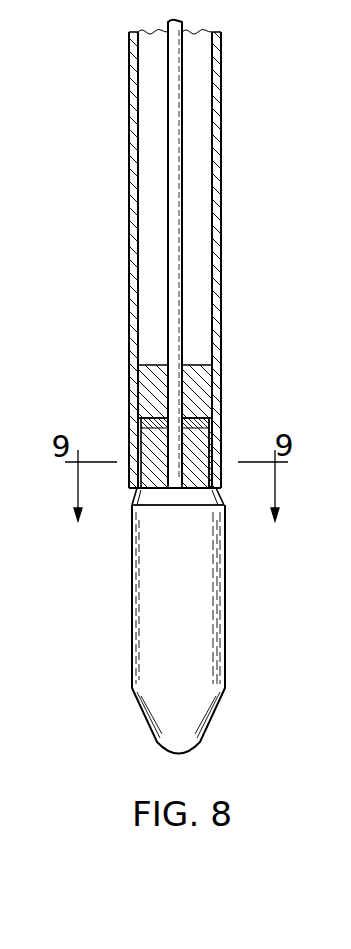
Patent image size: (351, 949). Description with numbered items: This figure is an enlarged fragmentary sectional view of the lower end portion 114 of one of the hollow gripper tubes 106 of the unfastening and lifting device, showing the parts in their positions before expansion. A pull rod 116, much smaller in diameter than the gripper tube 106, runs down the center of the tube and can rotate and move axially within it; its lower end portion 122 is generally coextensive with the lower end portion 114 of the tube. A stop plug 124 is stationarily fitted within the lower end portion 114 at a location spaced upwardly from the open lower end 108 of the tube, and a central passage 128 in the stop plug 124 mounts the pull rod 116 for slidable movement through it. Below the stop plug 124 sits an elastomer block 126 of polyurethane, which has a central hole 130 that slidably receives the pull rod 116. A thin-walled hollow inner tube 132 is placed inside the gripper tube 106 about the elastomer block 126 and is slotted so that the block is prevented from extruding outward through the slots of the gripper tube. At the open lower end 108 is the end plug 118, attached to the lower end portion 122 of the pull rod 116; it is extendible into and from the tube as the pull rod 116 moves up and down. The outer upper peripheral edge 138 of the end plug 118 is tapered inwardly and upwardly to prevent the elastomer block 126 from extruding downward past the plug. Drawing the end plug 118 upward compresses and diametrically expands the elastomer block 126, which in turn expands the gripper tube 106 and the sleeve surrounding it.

The gripper tube 106 is at (214, 258).
The lower end portion 114 is at (222, 273).
The pull rod 116 is at (182, 60).
The stop plug 124 is at (197, 390).
The central passage 128 is at (160, 398).
The open lower end 108 is at (135, 452).
The elastomer block 126 is at (157, 445).
The inner tube 132 is at (212, 452).
The central hole 130 is at (143, 480).
The lower end portion 122 is at (218, 484).
The outer upper peripheral edge 138 is at (160, 500).
The end plug 118 is at (225, 618).